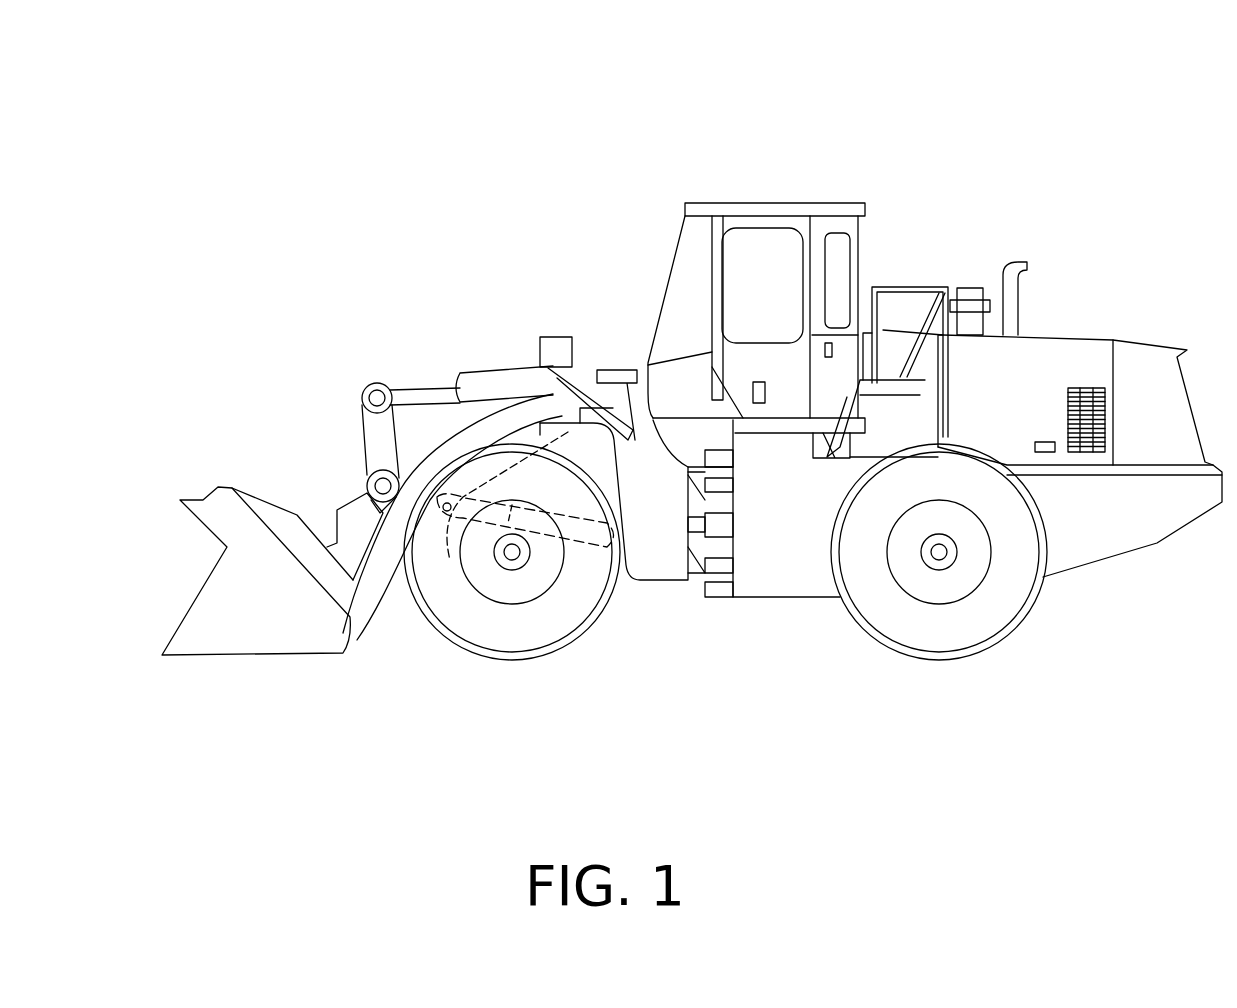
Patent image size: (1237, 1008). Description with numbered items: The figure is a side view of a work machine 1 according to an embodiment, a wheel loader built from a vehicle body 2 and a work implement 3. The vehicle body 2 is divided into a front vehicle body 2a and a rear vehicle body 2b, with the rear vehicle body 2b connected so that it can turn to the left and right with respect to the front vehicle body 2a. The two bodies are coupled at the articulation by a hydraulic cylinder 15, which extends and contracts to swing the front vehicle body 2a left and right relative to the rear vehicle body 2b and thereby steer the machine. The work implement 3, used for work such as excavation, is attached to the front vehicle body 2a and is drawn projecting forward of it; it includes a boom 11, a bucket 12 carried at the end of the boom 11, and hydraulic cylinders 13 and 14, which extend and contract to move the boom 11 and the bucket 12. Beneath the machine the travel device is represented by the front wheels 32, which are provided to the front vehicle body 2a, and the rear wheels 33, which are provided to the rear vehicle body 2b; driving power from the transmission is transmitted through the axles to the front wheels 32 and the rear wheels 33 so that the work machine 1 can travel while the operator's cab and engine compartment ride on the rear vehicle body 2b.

The work machine 1 is at (1002, 108).
The vehicle body 2 is at (765, 707).
The front vehicle body 2a is at (665, 575).
The rear vehicle body 2b is at (748, 595).
The work implement 3 is at (206, 472).
The boom 11 is at (412, 483).
The bucket 12 is at (218, 582).
The hydraulic cylinder 13 is at (450, 560).
The hydraulic cylinder 14 is at (477, 380).
The hydraulic cylinder 15 is at (722, 523).
The front wheels 32 is at (525, 643).
The rear wheels 33 is at (953, 640).